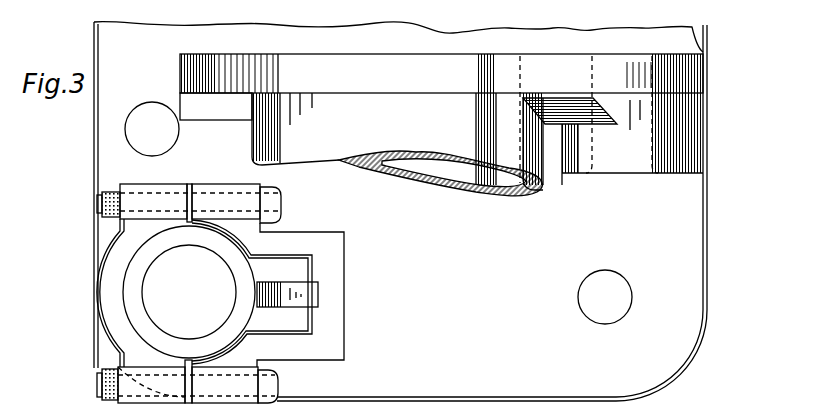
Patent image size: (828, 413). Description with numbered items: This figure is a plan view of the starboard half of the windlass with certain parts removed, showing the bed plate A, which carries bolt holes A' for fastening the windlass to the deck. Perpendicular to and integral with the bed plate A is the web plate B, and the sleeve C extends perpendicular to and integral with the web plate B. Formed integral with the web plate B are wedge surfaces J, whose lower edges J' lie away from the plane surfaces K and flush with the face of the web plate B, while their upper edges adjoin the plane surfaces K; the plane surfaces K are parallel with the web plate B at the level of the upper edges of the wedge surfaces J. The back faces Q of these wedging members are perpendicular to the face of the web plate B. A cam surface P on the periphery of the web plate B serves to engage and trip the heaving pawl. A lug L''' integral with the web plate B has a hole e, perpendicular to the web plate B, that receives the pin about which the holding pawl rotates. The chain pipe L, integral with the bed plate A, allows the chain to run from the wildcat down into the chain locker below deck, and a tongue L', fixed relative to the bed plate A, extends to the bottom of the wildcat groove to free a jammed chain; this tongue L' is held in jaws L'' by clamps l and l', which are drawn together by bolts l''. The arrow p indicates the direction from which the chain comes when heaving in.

The bed plate A is at (400, 211).
The bolt holes A' is at (378, 213).
The web plate B is at (441, 73).
The sleeve C is at (426, 173).
The wedge surfaces J is at (570, 80).
The lower edges of wedge surfaces J' is at (536, 129).
The plane surfaces K is at (221, 122).
The chain pipe L is at (189, 292).
The tongue L' is at (318, 287).
The jaws L'' is at (287, 281).
The lug L''' is at (565, 157).
The cam surface P is at (502, 58).
The back faces of wedging members Q is at (216, 106).
The hole e is at (636, 170).
The clamp l is at (288, 293).
The clamp l' is at (116, 293).
The bolts l'' is at (183, 293).
The arrow p is at (712, 298).